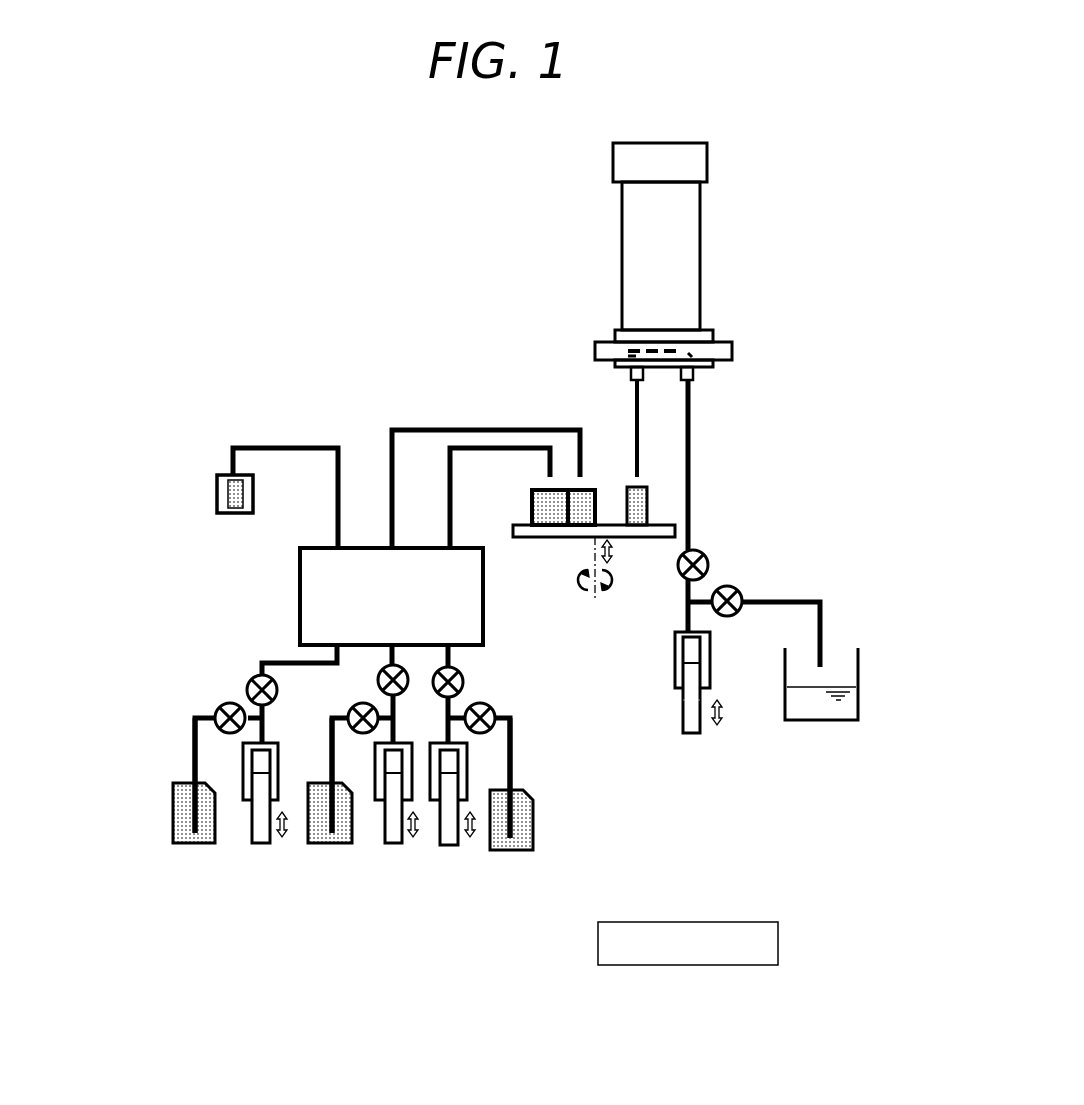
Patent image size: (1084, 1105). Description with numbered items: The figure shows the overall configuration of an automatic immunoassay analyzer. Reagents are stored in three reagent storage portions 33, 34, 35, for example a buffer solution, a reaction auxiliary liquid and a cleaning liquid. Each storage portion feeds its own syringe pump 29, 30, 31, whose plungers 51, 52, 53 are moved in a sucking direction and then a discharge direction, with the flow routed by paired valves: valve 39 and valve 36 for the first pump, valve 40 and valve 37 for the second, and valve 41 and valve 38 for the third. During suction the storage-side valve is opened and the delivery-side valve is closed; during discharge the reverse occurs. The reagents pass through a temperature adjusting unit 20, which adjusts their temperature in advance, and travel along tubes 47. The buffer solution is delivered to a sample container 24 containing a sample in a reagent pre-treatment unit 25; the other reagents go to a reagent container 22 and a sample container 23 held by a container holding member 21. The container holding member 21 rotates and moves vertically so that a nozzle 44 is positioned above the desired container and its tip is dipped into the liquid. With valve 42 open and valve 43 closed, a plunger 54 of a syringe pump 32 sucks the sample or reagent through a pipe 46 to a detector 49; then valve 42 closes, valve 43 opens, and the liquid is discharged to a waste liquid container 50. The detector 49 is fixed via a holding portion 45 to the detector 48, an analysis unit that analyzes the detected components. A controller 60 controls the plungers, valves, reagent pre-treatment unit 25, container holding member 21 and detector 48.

The temperature adjusting unit 20 is at (331, 596).
The container holding member 21 is at (673, 535).
The reagent container 22 is at (547, 434).
The sample container 23 is at (507, 434).
The sample container 24 is at (450, 447).
The reagent pre-treatment unit 25 is at (190, 487).
The syringe pump 29 is at (191, 764).
The syringe pump 30 is at (503, 773).
The syringe pump 31 is at (526, 794).
The syringe pump 32 is at (722, 707).
The reagent storage portion 33 is at (140, 797).
The reagent storage portion 34 is at (372, 846).
The reagent storage portion 35 is at (569, 816).
The valve 36 is at (209, 665).
The valve 37 is at (469, 635).
The valve 38 is at (498, 670).
The valve 39 is at (156, 679).
The valve 40 is at (282, 660).
The valve 41 is at (526, 705).
The valve 42 is at (748, 551).
The valve 43 is at (782, 583).
The nozzle 44 is at (562, 387).
The holding portion 45 is at (706, 338).
The pipe 46 is at (763, 520).
The tube 47 is at (478, 498).
The detector 48 is at (708, 236).
The detector 49 is at (593, 271).
The waste liquid container 50 is at (859, 684).
The plunger 51 is at (307, 879).
The plunger 52 is at (442, 879).
The plunger 53 is at (499, 879).
The plunger 54 is at (719, 766).
The controller 60 is at (778, 943).